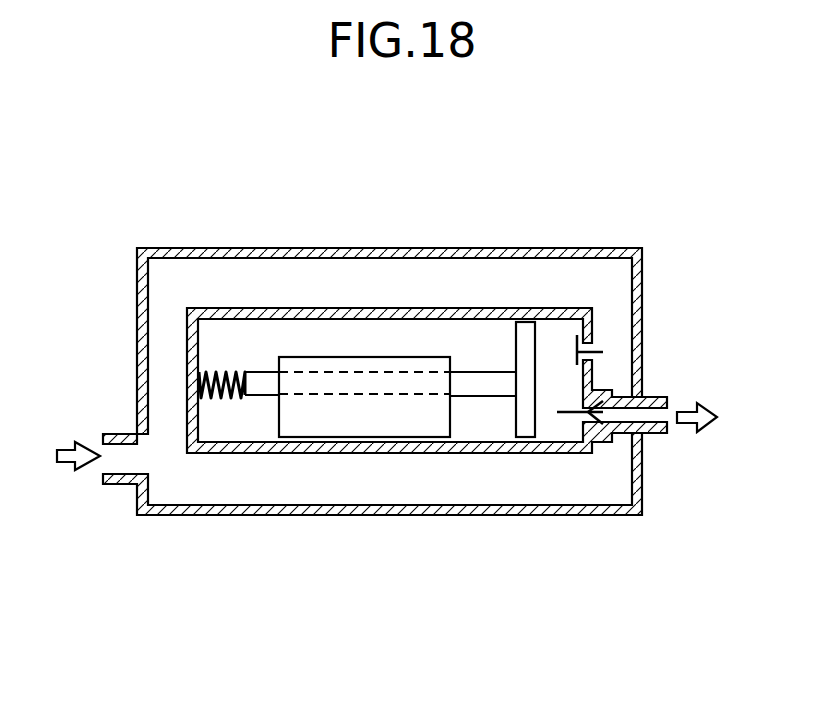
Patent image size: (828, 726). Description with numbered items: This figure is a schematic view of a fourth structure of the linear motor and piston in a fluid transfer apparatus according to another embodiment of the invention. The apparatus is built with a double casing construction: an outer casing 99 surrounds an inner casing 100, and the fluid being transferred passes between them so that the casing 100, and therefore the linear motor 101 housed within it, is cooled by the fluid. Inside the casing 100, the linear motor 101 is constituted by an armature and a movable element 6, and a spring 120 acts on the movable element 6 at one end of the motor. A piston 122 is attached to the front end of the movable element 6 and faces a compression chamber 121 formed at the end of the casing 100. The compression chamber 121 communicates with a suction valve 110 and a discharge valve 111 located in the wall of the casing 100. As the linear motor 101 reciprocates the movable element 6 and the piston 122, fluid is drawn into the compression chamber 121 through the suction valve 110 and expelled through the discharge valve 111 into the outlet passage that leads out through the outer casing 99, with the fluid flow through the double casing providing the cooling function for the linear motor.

The casing 99 is at (428, 515).
The casing 100 is at (357, 453).
The linear motor 101 is at (424, 415).
The movable element 6 is at (484, 397).
The spring 120 is at (218, 400).
The piston 122 is at (525, 348).
The compression chamber 121 is at (548, 340).
The suction valve 110 is at (598, 351).
The discharge valve 111 is at (558, 413).